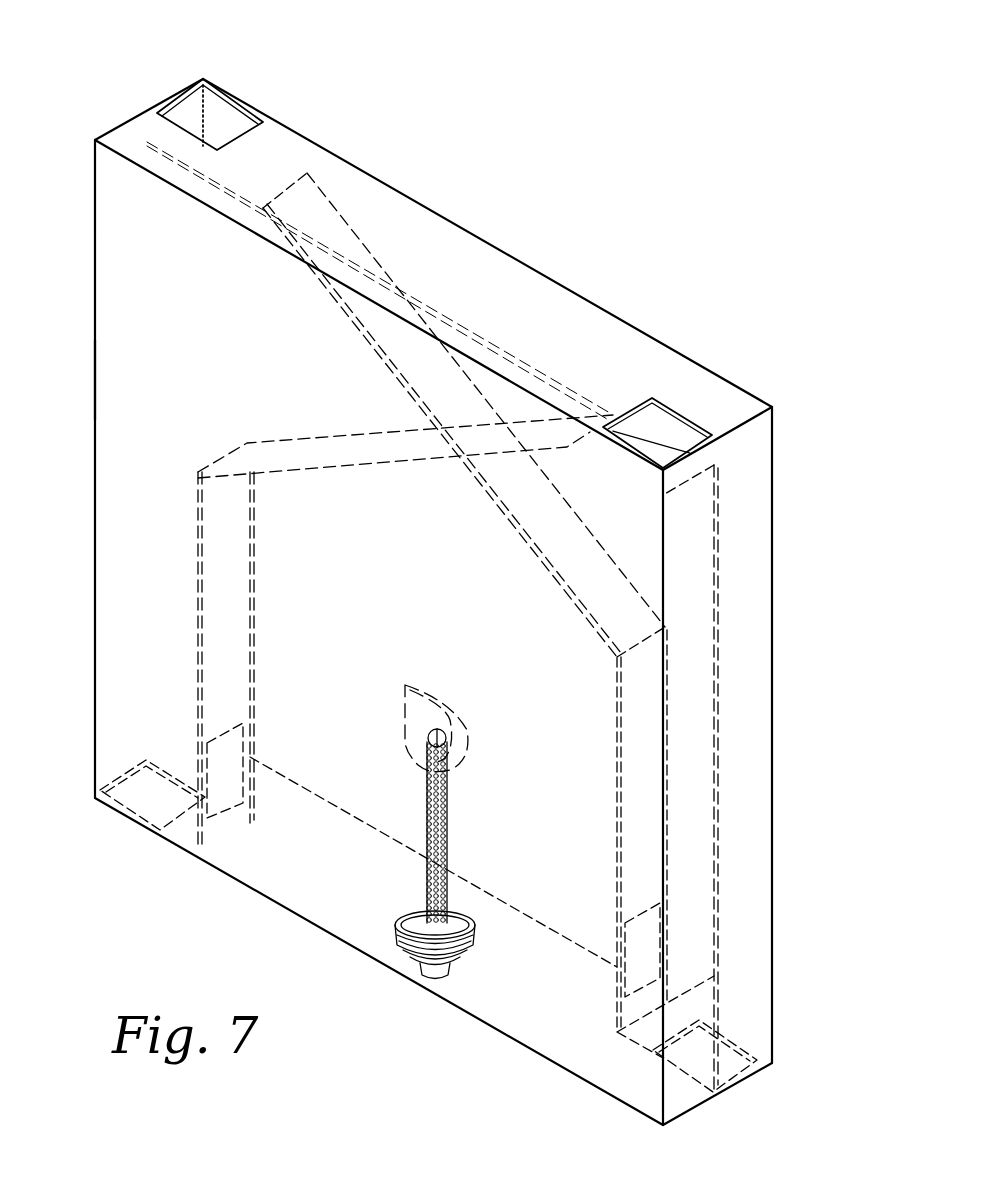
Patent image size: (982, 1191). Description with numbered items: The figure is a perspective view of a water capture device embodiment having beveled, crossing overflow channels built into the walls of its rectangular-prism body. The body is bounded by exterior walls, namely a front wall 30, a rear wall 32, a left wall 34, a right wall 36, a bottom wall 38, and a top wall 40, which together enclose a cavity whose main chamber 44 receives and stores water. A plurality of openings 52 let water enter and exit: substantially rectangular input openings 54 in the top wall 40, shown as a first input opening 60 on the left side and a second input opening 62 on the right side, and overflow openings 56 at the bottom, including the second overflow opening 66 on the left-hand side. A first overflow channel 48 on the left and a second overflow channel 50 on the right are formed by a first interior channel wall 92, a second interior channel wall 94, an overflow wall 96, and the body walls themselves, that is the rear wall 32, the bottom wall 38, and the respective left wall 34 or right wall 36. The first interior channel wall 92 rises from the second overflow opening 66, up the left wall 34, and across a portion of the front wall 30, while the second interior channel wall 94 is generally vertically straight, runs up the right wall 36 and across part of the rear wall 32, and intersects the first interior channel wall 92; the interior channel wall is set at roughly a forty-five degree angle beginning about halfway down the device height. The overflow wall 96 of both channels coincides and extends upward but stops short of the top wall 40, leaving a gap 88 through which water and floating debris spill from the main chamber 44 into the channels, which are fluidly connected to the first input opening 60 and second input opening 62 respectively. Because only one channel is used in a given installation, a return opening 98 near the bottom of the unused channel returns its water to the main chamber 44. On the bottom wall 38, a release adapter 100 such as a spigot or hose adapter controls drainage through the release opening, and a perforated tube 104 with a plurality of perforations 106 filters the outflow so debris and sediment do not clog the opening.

The front wall 30 is at (104, 258).
The rear wall 32 is at (316, 124).
The left wall 34 is at (81, 345).
The right wall 36 is at (745, 792).
The bottom wall 38 is at (366, 970).
The top wall 40 is at (113, 137).
The main chamber 44 is at (315, 866).
The first overflow channel 48 is at (131, 607).
The second overflow channel 50 is at (735, 988).
The plurality of openings 52 is at (165, 76).
The input opening 54 is at (233, 86).
The overflow opening 56 is at (757, 1090).
The first input opening 60 is at (186, 127).
The second input opening 62 is at (667, 430).
The second overflow opening 66 is at (112, 808).
The gap 88 is at (170, 135).
The first interior channel wall 92 is at (213, 532).
The second interior channel wall 94 is at (315, 196).
The overflow wall 96 is at (147, 220).
The return opening 98 is at (215, 795).
The release adapter 100 is at (455, 967).
The perforated tube 104 is at (450, 802).
The perforations 106 is at (410, 690).